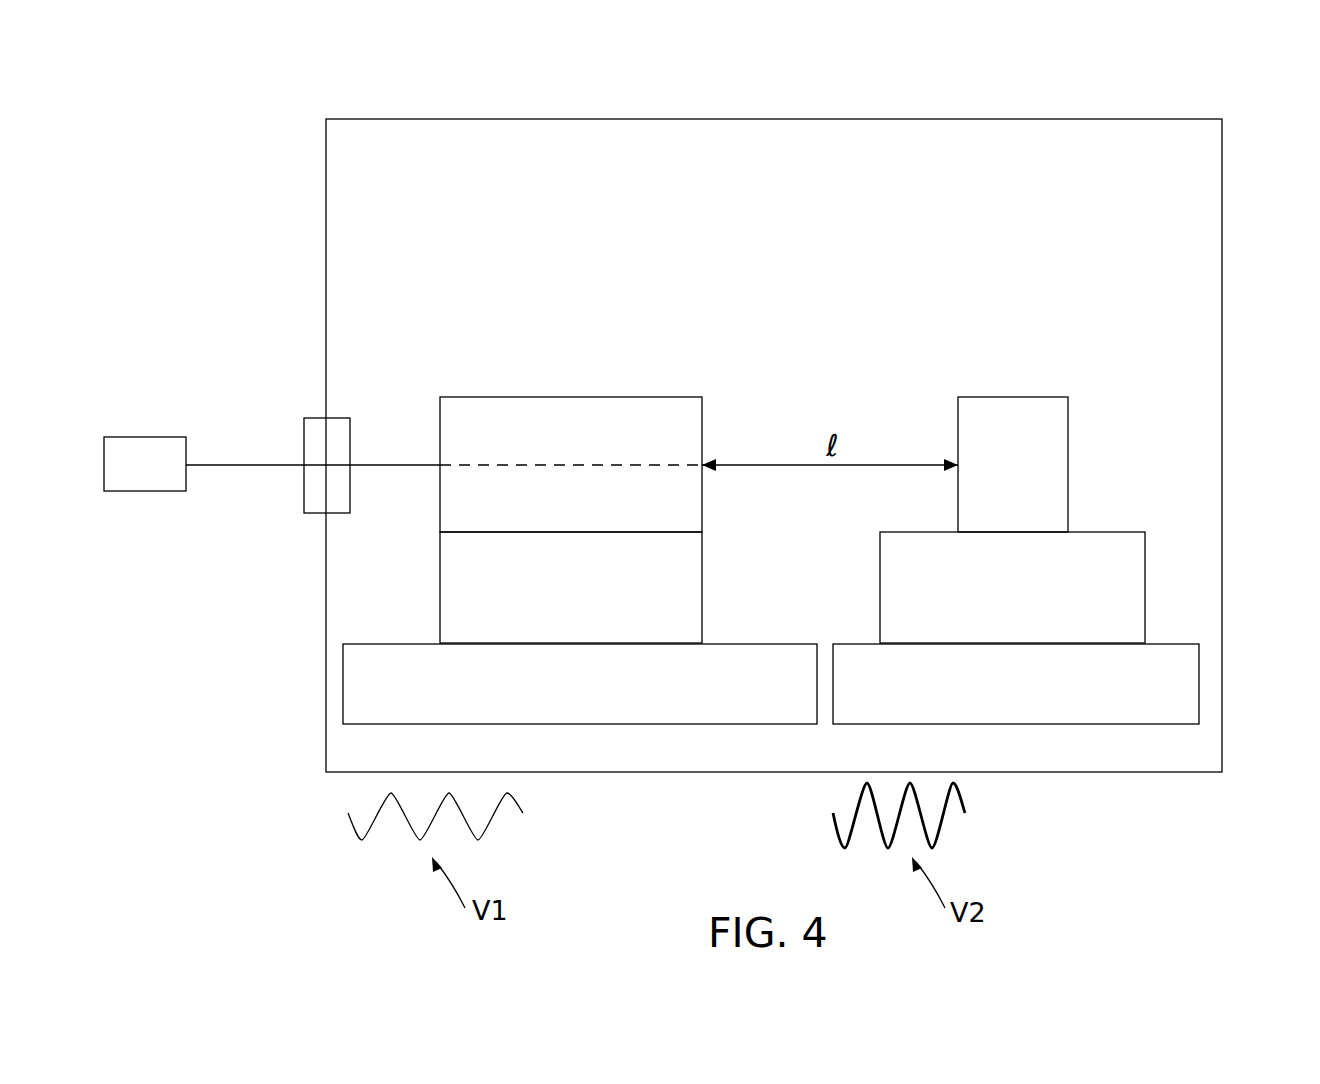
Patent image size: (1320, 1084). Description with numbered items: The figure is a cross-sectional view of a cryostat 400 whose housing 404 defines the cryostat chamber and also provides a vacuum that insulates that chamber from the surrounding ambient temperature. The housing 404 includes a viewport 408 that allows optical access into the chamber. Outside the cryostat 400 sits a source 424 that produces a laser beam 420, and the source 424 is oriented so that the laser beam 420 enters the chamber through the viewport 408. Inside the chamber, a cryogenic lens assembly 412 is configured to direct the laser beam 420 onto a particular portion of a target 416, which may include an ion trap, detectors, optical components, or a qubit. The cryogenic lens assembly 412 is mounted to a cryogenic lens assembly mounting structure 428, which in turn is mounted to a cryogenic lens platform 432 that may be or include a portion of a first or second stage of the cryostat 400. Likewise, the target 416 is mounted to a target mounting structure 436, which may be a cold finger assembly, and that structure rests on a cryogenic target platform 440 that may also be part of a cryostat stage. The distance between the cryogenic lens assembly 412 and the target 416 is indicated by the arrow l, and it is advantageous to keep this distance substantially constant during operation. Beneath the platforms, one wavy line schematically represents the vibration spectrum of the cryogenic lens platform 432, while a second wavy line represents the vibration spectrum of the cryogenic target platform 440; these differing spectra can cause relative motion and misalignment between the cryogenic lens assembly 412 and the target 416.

The cryostat 400 is at (250, 88).
The housing 404 is at (1080, 119).
The viewport 408 is at (304, 436).
The cryogenic lens assembly 412 is at (531, 410).
The target 416 is at (1010, 397).
The laser beam 420 is at (233, 467).
The source 424 is at (145, 464).
The cryogenic lens assembly mounting structure 428 is at (698, 567).
The cryogenic lens platform 432 is at (730, 644).
The target mounting structure 436 is at (1131, 578).
The cryogenic target platform 440 is at (1188, 685).